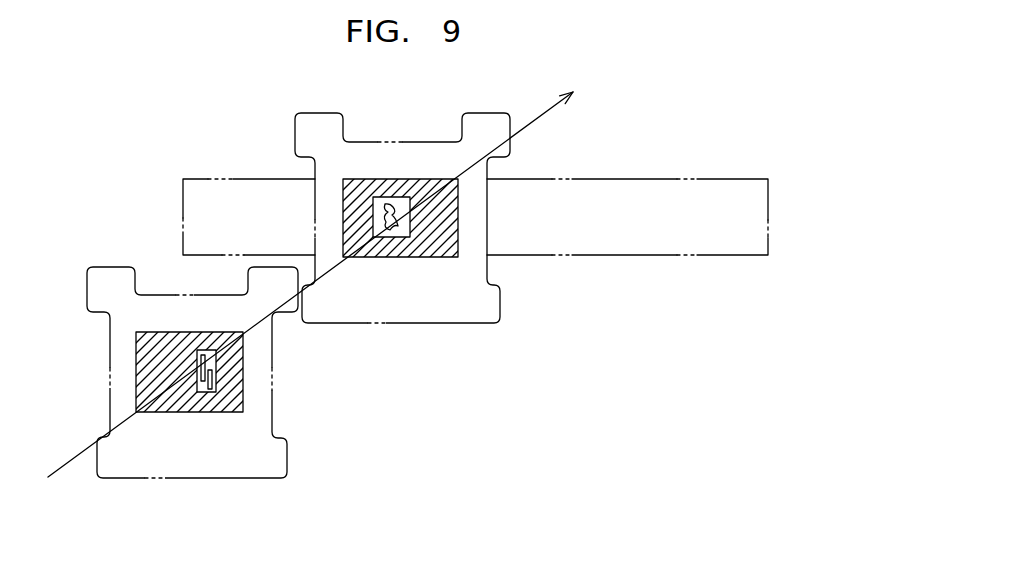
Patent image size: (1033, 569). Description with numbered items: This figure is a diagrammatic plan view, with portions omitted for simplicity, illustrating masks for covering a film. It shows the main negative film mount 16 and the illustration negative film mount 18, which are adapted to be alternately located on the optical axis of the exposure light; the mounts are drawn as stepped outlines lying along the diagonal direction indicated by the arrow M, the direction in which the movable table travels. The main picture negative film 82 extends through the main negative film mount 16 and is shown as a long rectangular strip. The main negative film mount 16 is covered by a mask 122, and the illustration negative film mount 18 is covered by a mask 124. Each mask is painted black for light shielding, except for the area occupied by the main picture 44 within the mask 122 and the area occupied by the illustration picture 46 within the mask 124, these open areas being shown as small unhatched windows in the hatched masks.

The main negative film mount 16 is at (413, 124).
The illustration negative film mount 18 is at (220, 262).
The main picture negative film 82 is at (250, 180).
The mask 122 is at (458, 200).
The main picture 44 is at (412, 226).
The mask 124 is at (243, 356).
The illustration picture 46 is at (203, 393).
The arrow M is at (538, 120).